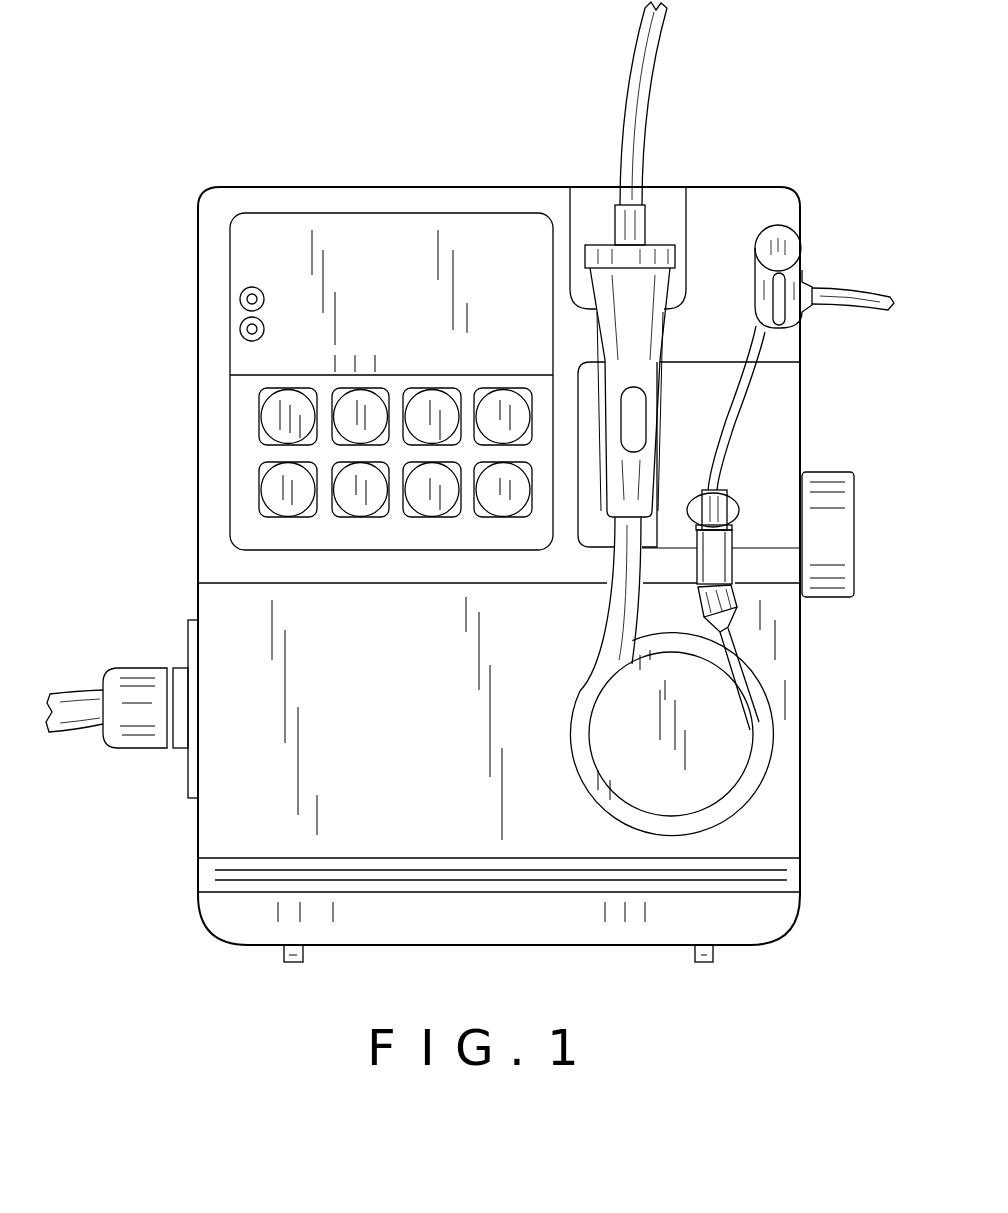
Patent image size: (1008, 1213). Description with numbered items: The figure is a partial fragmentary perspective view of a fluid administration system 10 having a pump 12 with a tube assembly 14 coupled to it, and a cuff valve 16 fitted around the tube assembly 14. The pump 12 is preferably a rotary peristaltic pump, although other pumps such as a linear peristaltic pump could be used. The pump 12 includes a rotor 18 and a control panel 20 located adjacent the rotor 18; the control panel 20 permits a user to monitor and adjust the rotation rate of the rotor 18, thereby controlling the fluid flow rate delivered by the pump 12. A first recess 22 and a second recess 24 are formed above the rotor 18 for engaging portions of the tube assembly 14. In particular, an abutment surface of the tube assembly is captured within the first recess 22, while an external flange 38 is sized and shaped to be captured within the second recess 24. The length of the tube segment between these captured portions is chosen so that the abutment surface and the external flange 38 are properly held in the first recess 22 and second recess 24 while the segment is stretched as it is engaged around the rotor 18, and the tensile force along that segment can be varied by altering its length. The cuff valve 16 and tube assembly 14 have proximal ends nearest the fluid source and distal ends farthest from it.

The fluid administration system 10 is at (312, 175).
The pump 12 is at (715, 187).
The tube assembly 14 is at (737, 393).
The cuff valve 16 is at (742, 610).
The rotor 18 is at (737, 770).
The control panel 20 is at (392, 327).
The first recess 22 is at (602, 570).
The second recess 24 is at (730, 561).
The external flange 38 is at (740, 523).